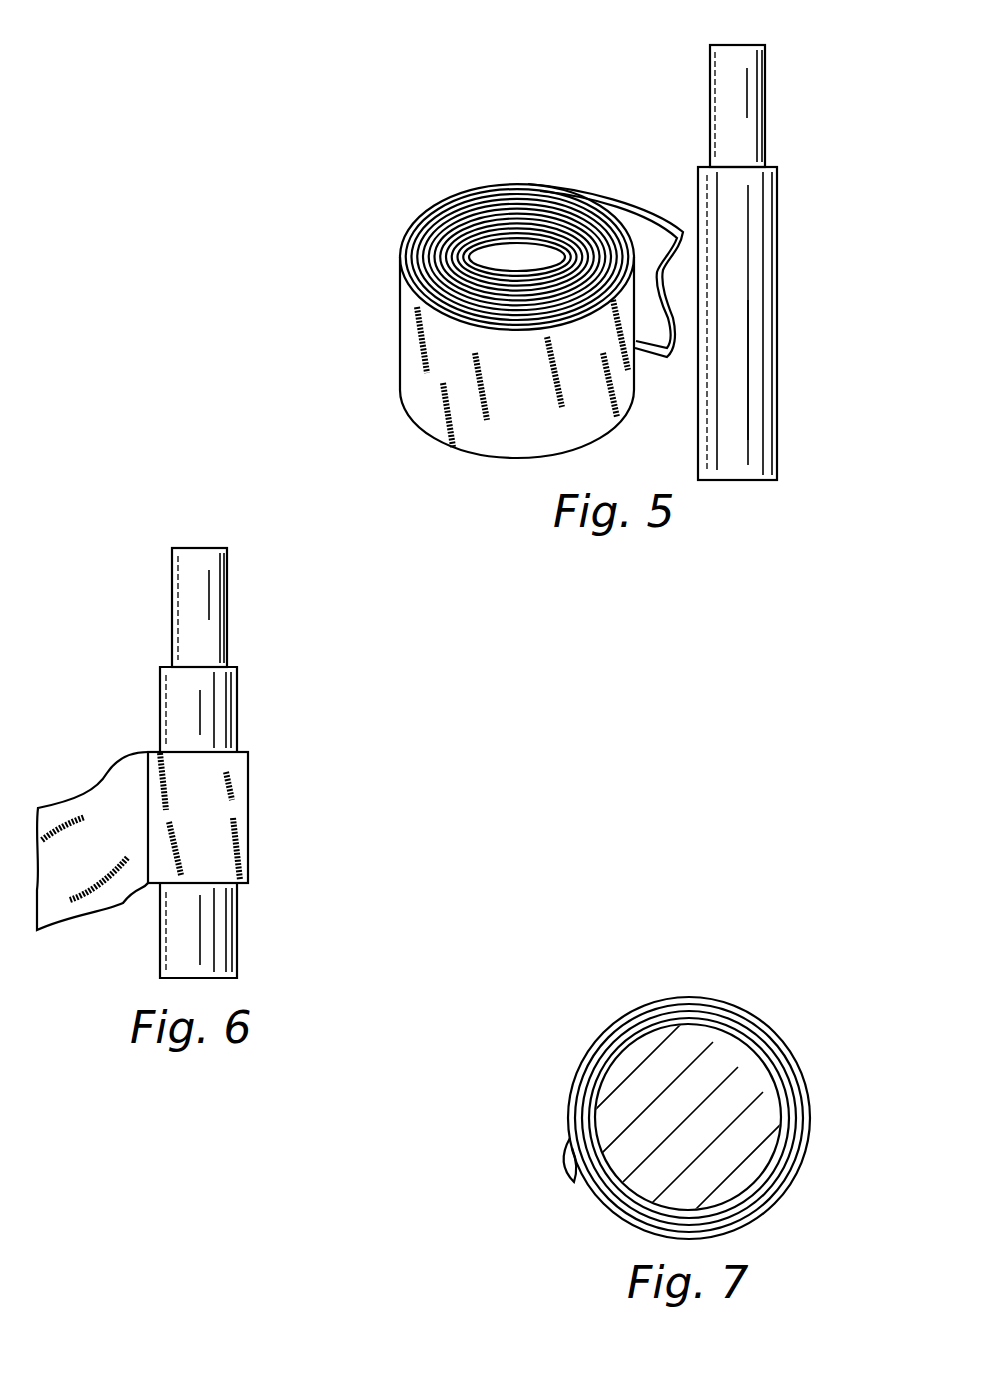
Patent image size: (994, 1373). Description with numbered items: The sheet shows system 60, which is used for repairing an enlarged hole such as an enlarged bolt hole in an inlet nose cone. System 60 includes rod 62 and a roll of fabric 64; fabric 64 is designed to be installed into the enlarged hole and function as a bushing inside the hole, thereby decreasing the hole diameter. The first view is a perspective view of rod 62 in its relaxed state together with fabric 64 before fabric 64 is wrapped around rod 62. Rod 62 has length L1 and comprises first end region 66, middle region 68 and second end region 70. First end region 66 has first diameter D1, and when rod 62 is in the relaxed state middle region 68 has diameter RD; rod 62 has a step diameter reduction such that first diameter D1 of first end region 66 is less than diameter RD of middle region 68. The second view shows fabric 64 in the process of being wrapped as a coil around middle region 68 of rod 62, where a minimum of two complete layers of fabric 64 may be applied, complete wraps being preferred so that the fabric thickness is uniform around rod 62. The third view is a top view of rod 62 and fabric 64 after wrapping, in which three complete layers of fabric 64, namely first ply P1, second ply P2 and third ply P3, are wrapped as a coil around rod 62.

In FIG. 5, the system 60 is at (596, 76).
In FIG. 5, the rod 62 is at (692, 109).
In FIG. 6, the rod 62 is at (95, 677).
In FIG. 7, the rod 62 is at (707, 1047).
In FIG. 5, the roll of fabric 64 is at (362, 262).
In FIG. 6, the roll of fabric 64 is at (232, 805).
In FIG. 7, the roll of fabric 64 is at (709, 1106).
In FIG. 5, the first end region 66 is at (752, 95).
In FIG. 6, the first end region 66 is at (210, 620).
In FIG. 5, the middle region 68 is at (757, 280).
In FIG. 6, the middle region 68 is at (220, 718).
In FIG. 5, the second end region 70 is at (753, 438).
In FIG. 5, the first diameter D1 is at (710, 34).
In FIG. 5, the diameter of middle region RD is at (777, 160).
In FIG. 5, the length L1 is at (846, 45).
In FIG. 7, the first ply P1 is at (757, 1047).
In FIG. 7, the second ply P2 is at (777, 1063).
In FIG. 7, the third ply P3 is at (803, 1100).